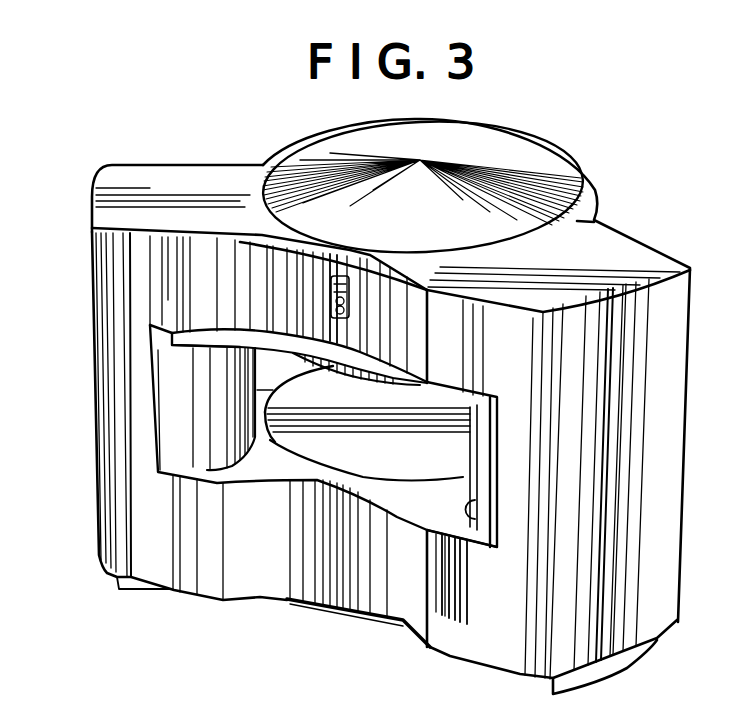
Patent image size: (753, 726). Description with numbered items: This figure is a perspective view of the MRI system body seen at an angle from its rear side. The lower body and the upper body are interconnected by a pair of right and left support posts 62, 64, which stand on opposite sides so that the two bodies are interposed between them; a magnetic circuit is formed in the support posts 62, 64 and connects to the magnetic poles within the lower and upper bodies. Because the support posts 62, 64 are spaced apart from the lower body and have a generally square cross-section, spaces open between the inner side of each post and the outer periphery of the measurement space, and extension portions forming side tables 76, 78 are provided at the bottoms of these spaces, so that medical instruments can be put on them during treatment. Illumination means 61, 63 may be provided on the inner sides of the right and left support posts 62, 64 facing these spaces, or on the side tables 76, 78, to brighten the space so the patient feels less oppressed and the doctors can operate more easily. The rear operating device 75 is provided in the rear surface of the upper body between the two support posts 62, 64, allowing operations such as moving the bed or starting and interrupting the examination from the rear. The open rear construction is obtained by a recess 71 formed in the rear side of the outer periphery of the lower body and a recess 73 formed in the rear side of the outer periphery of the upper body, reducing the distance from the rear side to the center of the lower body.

The illumination means 61 is at (270, 435).
The right support post 62 is at (180, 403).
The illumination means 63 is at (470, 502).
The left support post 64 is at (470, 408).
The recess 71 is at (337, 585).
The recess 73 is at (403, 300).
The rear operating device 75 is at (340, 276).
The side table 76 is at (437, 513).
The side table 78 is at (268, 455).